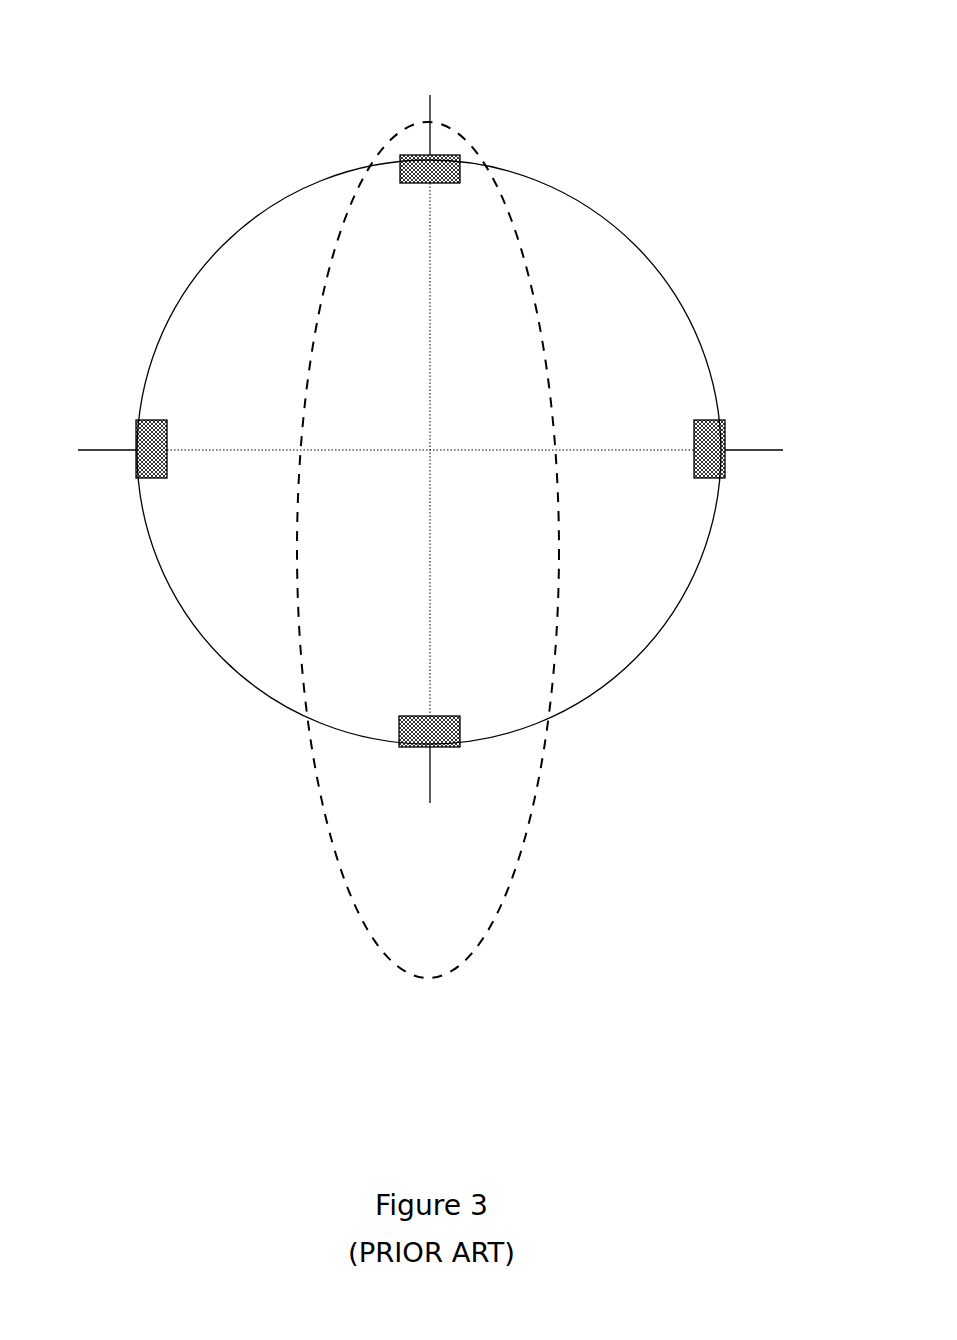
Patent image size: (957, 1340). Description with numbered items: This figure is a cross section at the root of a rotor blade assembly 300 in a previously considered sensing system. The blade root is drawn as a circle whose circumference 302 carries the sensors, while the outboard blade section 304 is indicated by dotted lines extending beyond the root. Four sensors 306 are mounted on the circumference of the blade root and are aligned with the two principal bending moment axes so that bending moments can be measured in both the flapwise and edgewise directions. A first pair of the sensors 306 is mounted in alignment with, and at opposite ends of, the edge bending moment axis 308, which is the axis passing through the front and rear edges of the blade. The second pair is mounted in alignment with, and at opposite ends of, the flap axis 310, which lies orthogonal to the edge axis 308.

The rotor blade assembly 300 is at (203, 125).
The circumference 302 is at (585, 192).
The outboard blade section 304 is at (330, 832).
The sensors 306 is at (137, 420).
The edge bending moment axis 308 is at (435, 100).
The flap axis 310 is at (100, 452).